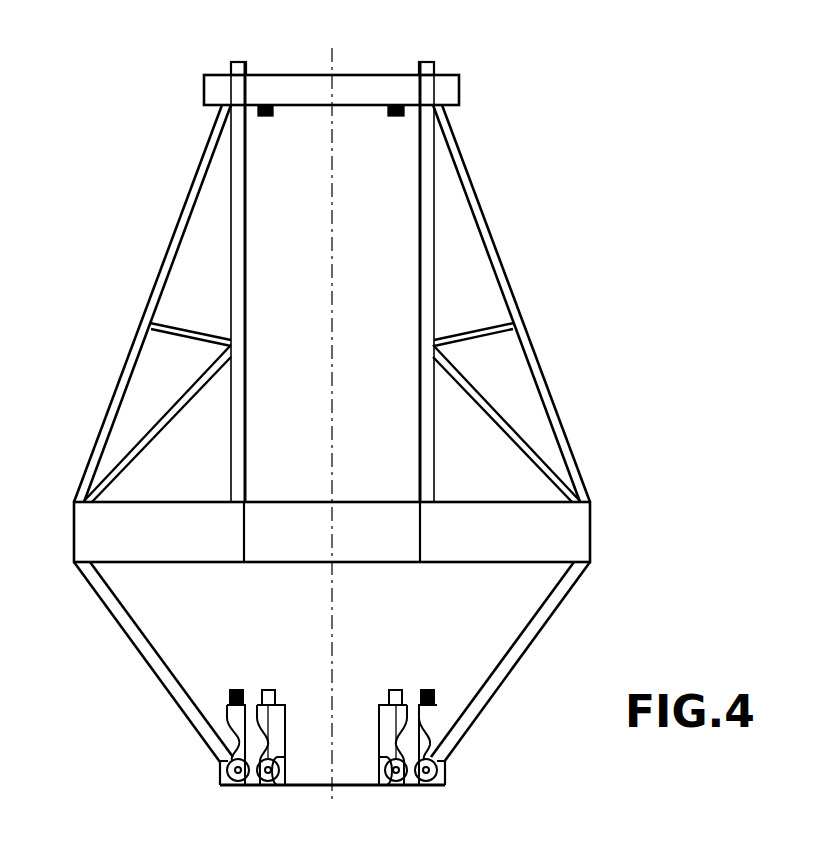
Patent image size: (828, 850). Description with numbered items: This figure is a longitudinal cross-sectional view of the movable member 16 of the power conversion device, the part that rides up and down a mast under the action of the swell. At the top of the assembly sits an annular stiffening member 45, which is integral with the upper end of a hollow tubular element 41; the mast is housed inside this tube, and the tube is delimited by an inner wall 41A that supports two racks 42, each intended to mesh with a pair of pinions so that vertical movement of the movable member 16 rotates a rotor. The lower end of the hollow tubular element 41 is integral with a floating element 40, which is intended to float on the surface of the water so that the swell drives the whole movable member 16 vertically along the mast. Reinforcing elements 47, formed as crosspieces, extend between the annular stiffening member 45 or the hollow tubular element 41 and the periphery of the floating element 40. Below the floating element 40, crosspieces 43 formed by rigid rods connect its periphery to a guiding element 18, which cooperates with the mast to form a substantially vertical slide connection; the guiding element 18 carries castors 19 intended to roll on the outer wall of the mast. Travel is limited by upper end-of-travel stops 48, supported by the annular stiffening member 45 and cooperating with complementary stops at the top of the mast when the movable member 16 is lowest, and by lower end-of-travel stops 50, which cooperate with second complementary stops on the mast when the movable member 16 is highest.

The movable member 16 is at (518, 255).
The guiding element 18 is at (462, 775).
The castors 19 is at (250, 776).
The floating element 40 is at (570, 522).
The hollow tubular element 41 is at (437, 222).
The inner wall 41A is at (245, 203).
The racks 42 is at (420, 255).
The crosspieces 43 is at (115, 608).
The annular stiffening member 45 is at (312, 96).
The reinforcing elements 47 is at (152, 298).
The upper end-of-travel stops 48 is at (267, 117).
The lower end-of-travel stops 50 is at (232, 692).